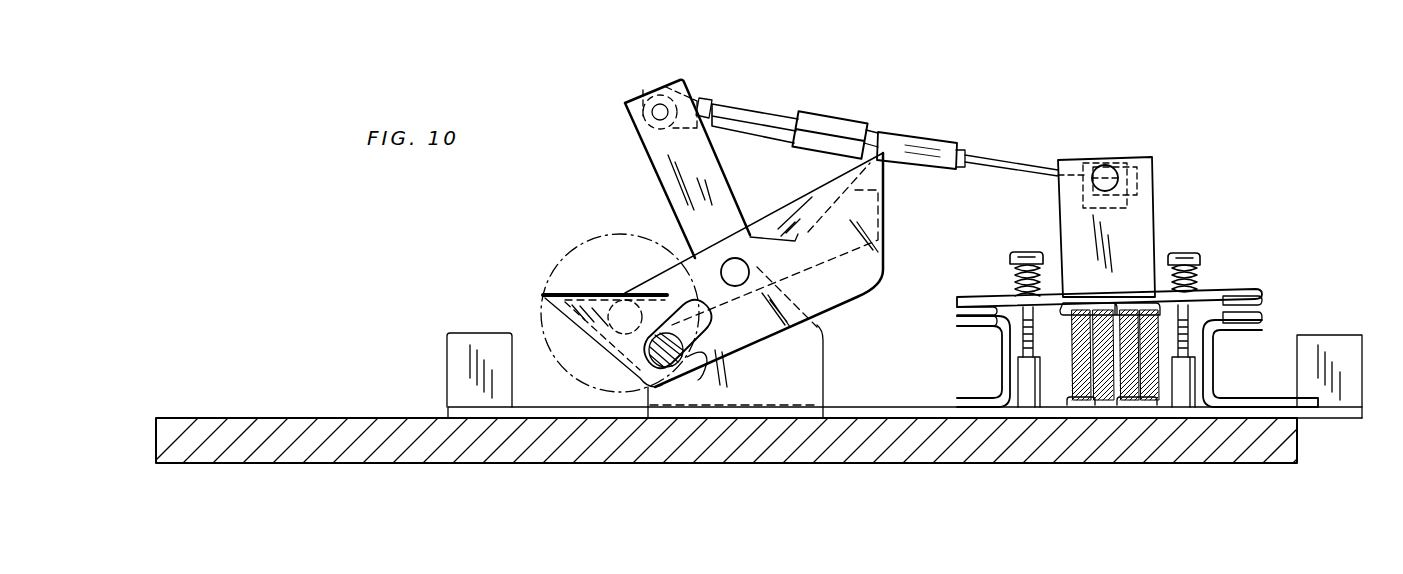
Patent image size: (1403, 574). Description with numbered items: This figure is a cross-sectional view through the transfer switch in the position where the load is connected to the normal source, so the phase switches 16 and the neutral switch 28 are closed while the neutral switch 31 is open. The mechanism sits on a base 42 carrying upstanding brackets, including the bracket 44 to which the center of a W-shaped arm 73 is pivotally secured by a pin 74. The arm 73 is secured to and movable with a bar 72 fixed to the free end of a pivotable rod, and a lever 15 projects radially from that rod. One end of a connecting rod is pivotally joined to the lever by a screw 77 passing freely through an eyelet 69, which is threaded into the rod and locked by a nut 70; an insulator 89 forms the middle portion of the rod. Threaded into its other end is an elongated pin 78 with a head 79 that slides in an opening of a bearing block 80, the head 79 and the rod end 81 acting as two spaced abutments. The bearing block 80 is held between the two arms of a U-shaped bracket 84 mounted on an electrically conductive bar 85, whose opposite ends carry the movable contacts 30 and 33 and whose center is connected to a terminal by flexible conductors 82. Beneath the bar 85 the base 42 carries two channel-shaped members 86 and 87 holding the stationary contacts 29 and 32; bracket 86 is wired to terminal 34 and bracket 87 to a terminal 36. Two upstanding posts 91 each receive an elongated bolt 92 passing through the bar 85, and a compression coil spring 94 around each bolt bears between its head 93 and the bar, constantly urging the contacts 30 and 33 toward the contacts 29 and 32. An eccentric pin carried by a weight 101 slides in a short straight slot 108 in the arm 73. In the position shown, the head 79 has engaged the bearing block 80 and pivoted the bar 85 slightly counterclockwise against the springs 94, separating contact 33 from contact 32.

The operating arm 15 is at (664, 172).
The phase switches 16 is at (757, 122).
The neutral switch 28 is at (946, 303).
The stationary contact 29 is at (957, 319).
The movable contact 30 is at (957, 310).
The neutral switch 31 is at (1281, 283).
The stationary contact 32 is at (1262, 318).
The movable contact 33 is at (1262, 300).
The terminal 34 is at (488, 343).
The support block 36 is at (1350, 350).
The base 42 is at (313, 428).
The upstanding bracket 44 is at (808, 382).
The eyelet 69 is at (663, 92).
The nut 70 is at (706, 98).
The bar 72 is at (795, 228).
The W-shaped arm 73 is at (853, 288).
The pin 74 is at (738, 258).
The screw 77 is at (652, 116).
The elongated pin 78 is at (1010, 166).
The head 79 is at (1156, 170).
The bearing block 80 is at (1112, 165).
The end of rod 81 is at (962, 140).
The flexible conductors 82 is at (1077, 372).
The U-shaped bracket 84 is at (1148, 215).
The electrically conductive bar 85 is at (1243, 292).
The channel-shaped member 86 is at (1010, 368).
The channel-shaped member 87 is at (1210, 352).
The insulator 89 is at (843, 124).
The upstanding posts 91 is at (1188, 392).
The elongated bolt 92 is at (1028, 330).
The head 93 is at (1026, 252).
The compression coil spring 94 is at (1013, 275).
The weight 101 is at (572, 265).
The short straight slot 108 is at (703, 363).